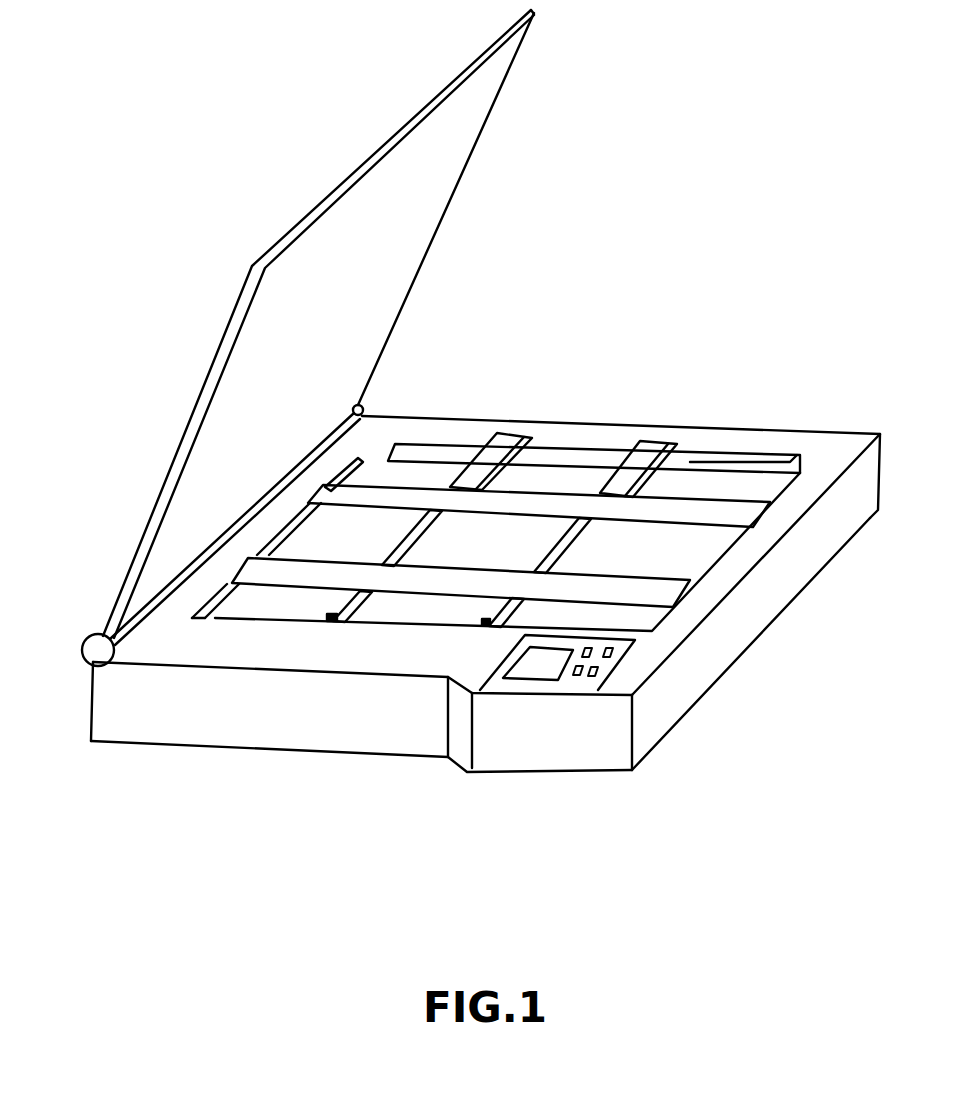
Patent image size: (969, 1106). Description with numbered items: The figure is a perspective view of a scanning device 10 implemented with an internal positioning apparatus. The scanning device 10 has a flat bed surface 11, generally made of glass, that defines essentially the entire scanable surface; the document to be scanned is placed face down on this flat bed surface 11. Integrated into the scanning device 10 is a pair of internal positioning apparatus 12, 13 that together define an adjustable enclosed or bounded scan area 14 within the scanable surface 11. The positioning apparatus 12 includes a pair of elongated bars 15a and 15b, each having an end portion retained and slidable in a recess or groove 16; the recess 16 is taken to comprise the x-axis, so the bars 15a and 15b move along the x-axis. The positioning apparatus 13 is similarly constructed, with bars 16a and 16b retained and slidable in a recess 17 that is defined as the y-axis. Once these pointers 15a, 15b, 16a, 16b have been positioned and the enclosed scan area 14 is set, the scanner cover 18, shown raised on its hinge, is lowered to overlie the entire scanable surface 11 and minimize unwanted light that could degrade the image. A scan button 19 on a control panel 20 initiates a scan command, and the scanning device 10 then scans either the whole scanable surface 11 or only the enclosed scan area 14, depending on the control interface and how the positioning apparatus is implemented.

The scanning device 10 is at (808, 192).
The flat bed surface 11 is at (617, 617).
The internal positioning apparatus 12 is at (622, 385).
The internal positioning apparatus 13 is at (289, 505).
The enclosed scan area 14 is at (487, 553).
The elongated bar 15a is at (512, 432).
The elongated bar 15b is at (660, 438).
The recess 16 is at (742, 456).
The bar 16a is at (327, 492).
The bar 16b is at (250, 570).
The recess 17 is at (345, 460).
The scanner cover 18 is at (461, 114).
The scan button 19 is at (530, 663).
The control panel 20 is at (579, 680).